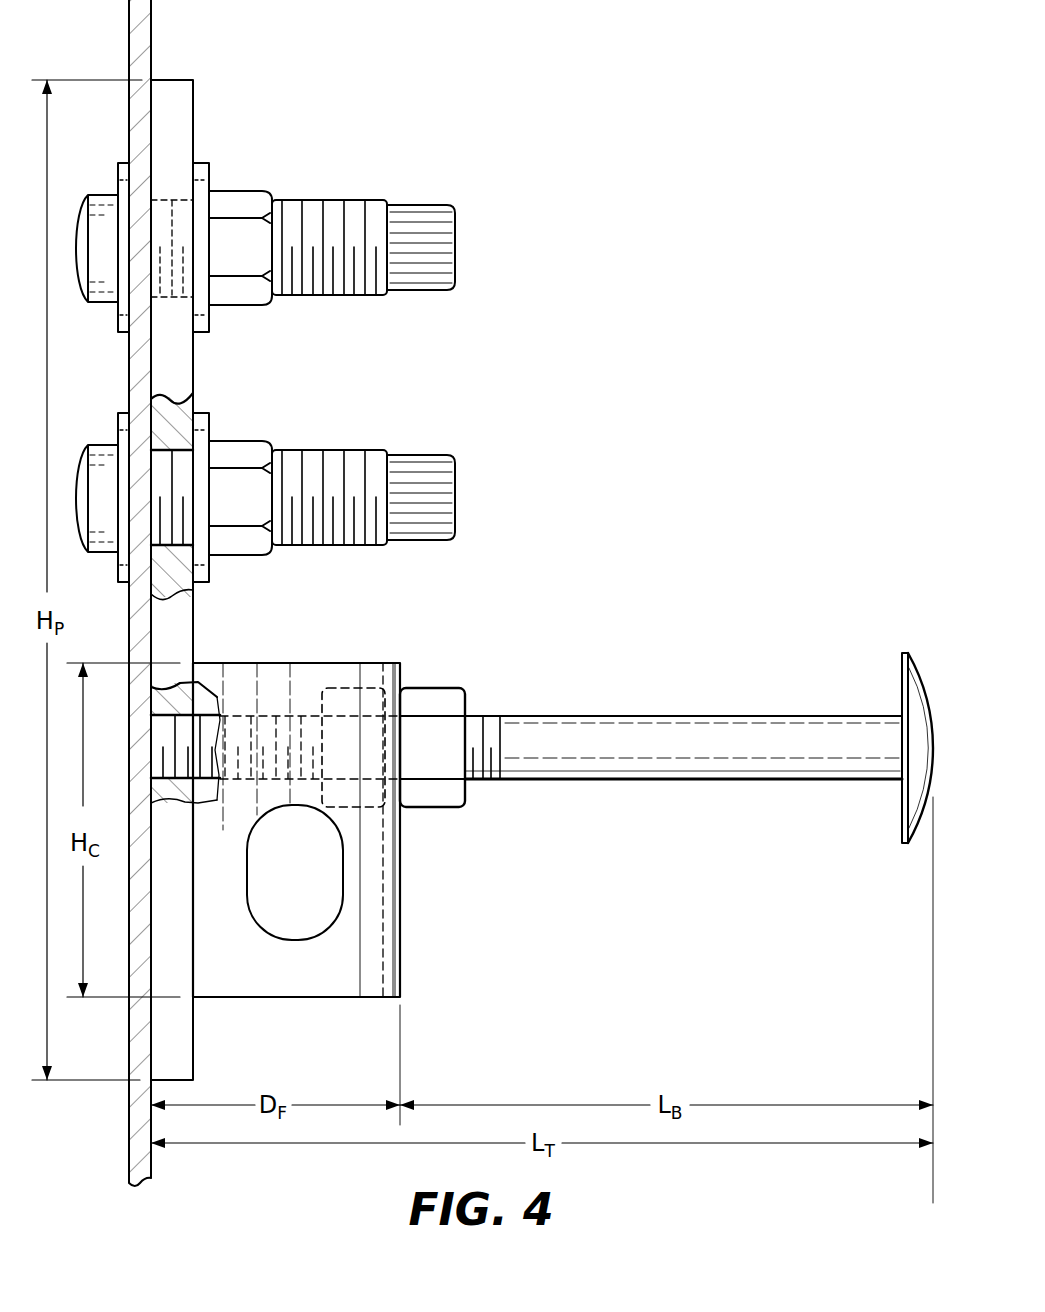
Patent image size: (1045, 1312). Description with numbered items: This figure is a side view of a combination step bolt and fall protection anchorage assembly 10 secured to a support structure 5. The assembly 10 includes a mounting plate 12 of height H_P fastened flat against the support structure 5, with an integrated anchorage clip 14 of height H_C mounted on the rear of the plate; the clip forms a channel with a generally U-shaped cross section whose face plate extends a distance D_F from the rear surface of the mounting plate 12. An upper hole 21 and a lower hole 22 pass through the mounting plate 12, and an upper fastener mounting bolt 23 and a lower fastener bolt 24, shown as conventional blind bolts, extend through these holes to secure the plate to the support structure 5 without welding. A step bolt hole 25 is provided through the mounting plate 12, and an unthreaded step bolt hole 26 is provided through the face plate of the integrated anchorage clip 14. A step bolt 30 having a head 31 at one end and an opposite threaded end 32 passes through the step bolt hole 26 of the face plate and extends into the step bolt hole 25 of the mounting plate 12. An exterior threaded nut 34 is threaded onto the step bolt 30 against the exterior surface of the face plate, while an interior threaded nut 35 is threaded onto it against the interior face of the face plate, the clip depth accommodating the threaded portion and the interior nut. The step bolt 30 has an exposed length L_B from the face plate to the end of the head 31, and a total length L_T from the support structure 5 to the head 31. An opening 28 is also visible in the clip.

The support structure 5 is at (143, 38).
The combination step bolt and fall protection anchorage assembly 10 is at (222, 577).
The mounting plate 12 is at (180, 133).
The integrated anchorage clip 14 is at (296, 828).
The upper hole 21 is at (265, 240).
The lower hole 22 is at (265, 493).
The upper fastener mounting bolt 23 is at (355, 208).
The lower fastener bolt 24 is at (352, 463).
The step bolt hole 25 is at (170, 718).
The step bolt hole 26 is at (407, 730).
The hole in bracket 28 is at (248, 880).
The step bolt 30 is at (713, 743).
The head 31 is at (917, 715).
The threaded end 32 is at (196, 730).
The exterior threaded nut 34 is at (452, 698).
The interior threaded nut 35 is at (368, 798).